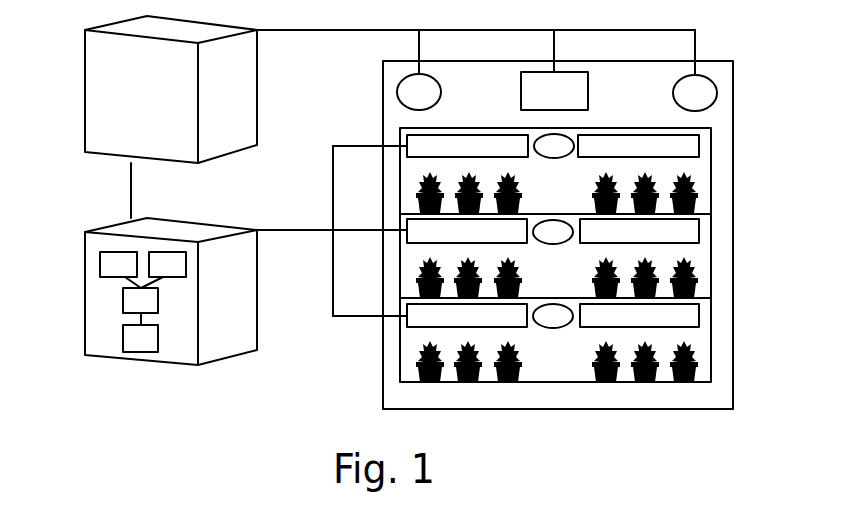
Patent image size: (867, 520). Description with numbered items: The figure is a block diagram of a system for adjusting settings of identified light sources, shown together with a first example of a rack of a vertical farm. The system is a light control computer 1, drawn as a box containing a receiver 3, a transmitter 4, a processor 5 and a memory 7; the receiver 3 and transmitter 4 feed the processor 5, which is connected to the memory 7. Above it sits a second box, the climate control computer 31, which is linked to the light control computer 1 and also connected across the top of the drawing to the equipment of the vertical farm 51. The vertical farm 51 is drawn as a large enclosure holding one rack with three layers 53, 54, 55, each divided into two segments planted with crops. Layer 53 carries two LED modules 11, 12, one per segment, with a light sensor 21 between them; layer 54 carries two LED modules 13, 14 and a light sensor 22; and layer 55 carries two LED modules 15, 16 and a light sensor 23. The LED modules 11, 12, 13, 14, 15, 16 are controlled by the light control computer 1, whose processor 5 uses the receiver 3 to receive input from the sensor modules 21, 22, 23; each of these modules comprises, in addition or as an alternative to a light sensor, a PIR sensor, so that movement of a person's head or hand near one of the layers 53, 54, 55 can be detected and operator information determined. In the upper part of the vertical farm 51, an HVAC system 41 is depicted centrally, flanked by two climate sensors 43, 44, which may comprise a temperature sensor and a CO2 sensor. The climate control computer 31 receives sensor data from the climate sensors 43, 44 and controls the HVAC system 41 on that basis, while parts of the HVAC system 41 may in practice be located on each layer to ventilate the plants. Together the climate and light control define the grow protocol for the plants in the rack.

The light control computer 1 is at (85, 286).
The receiver 3 is at (120, 270).
The transmitter 4 is at (163, 270).
The processor 5 is at (140, 306).
The memory 7 is at (140, 338).
The climate control computer 31 is at (85, 88).
The vertical farm 51 is at (733, 82).
The layer 53 is at (711, 172).
The layer 54 is at (711, 258).
The layer 55 is at (711, 347).
The LED module 11 is at (467, 146).
The LED module 12 is at (638, 146).
The LED module 13 is at (467, 231).
The LED module 14 is at (639, 231).
The LED module 15 is at (467, 315).
The LED module 16 is at (639, 315).
The light sensor 21 is at (554, 146).
The light sensor 22 is at (553, 232).
The light sensor 23 is at (553, 316).
The HVAC system 41 is at (554, 91).
The climate sensor 43 is at (419, 92).
The climate sensor 44 is at (695, 93).